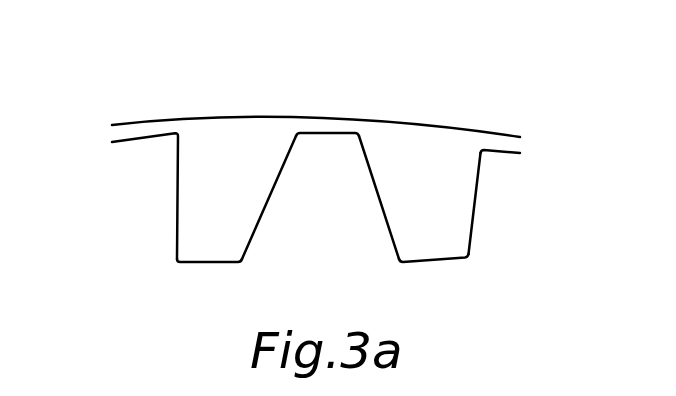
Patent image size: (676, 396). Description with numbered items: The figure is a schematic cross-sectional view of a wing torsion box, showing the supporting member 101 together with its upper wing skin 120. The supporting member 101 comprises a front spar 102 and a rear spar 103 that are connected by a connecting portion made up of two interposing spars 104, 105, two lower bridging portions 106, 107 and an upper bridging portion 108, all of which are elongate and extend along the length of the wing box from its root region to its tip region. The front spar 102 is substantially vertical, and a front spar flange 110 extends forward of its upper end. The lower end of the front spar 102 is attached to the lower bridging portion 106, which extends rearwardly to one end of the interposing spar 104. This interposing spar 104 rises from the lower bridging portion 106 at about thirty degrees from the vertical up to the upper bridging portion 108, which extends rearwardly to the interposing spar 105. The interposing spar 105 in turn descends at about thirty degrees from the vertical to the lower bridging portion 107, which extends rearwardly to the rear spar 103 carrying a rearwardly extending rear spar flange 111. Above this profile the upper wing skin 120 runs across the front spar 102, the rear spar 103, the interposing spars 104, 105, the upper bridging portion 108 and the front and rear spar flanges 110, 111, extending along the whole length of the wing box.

The supporting member 101 is at (485, 203).
The front spar 102 is at (173, 221).
The rear spar 103 is at (472, 244).
The interposing spar 104 is at (263, 218).
The interposing spar 105 is at (367, 172).
The lower bridging portion 106 is at (213, 266).
The lower bridging portion 107 is at (443, 260).
The upper bridging portion 108 is at (312, 132).
The front spar flange 110 is at (146, 139).
The rear spar flange 111 is at (495, 155).
The upper wing skin 120 is at (358, 117).